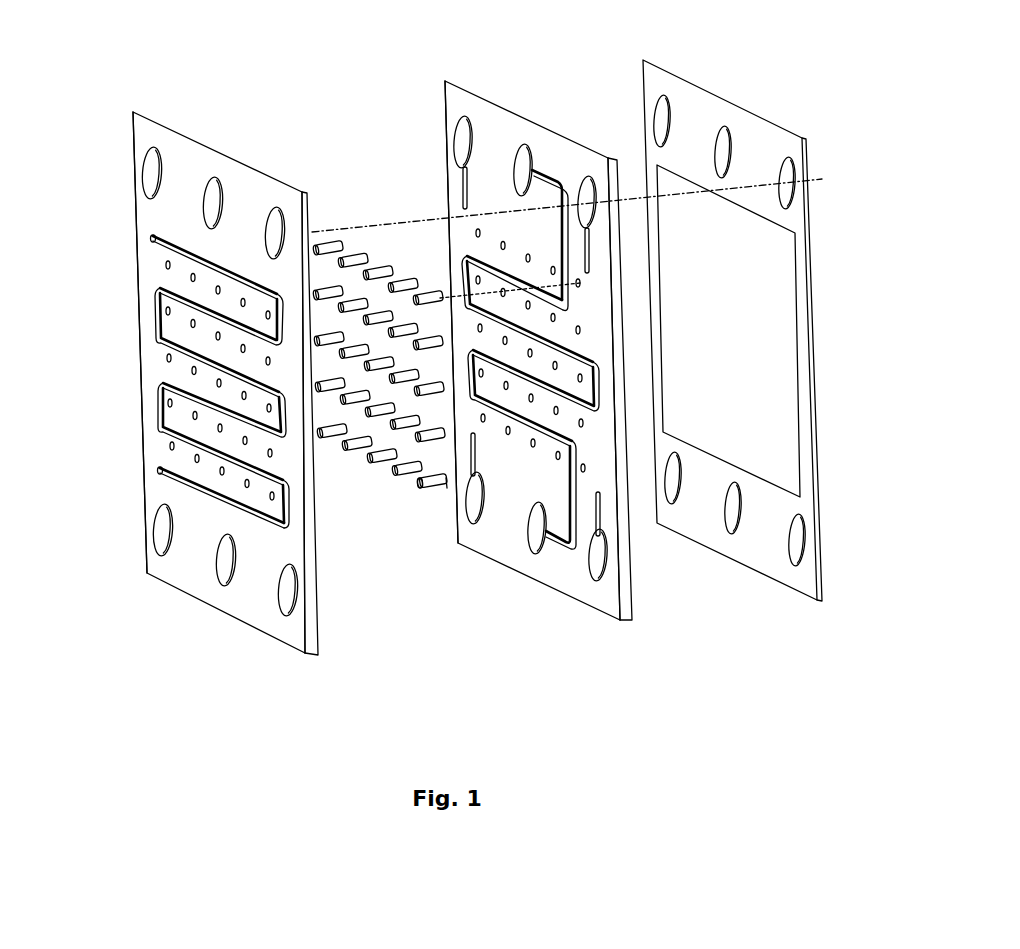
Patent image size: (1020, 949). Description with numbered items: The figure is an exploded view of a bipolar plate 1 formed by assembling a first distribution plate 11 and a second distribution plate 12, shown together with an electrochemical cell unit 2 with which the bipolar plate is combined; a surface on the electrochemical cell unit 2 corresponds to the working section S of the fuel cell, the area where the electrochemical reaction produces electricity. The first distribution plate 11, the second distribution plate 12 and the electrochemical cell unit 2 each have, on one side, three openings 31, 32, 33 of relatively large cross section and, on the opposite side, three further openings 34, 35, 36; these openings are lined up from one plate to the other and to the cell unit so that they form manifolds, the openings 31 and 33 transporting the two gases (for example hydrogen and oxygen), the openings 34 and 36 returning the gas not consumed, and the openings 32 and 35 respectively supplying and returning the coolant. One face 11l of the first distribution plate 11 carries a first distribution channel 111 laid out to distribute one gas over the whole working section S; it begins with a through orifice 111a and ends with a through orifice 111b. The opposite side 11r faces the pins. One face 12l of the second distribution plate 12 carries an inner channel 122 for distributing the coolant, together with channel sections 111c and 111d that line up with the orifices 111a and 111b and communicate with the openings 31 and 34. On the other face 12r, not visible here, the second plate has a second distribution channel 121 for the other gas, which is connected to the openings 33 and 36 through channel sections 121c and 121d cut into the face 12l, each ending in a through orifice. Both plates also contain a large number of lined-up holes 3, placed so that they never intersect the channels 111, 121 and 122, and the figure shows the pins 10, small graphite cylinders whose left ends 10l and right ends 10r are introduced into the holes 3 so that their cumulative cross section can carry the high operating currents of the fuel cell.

The bipolar plate 1 is at (329, 108).
The electrochemical cell unit 2 is at (823, 590).
The holes 3 is at (167, 403).
The pins 10 is at (437, 487).
The left end of pin 10l is at (420, 490).
The right end of pin 10r is at (462, 487).
The first distribution plate 11 is at (315, 663).
The face of the first distribution plate 11l is at (116, 340).
The right side of first plate 11r is at (337, 642).
The first distribution channel 111 is at (160, 283).
The orifice 111a is at (152, 233).
The orifice 111b is at (160, 468).
The channel section 111c is at (463, 178).
The channel section 111d is at (472, 450).
The second distribution plate 12 is at (625, 627).
The face of the second distribution plate 12l is at (607, 603).
The other face of the second distribution plate 12r is at (645, 608).
The second distribution channel 121 is at (640, 541).
The channel section 121c is at (592, 245).
The channel section 121d is at (560, 540).
The inner channel 122 is at (553, 177).
The opening 31 is at (143, 111).
The opening 32 is at (213, 187).
The opening 33 is at (270, 222).
The opening 34 is at (163, 540).
The opening 35 is at (227, 563).
The opening 36 is at (287, 600).
The working section S is at (707, 212).